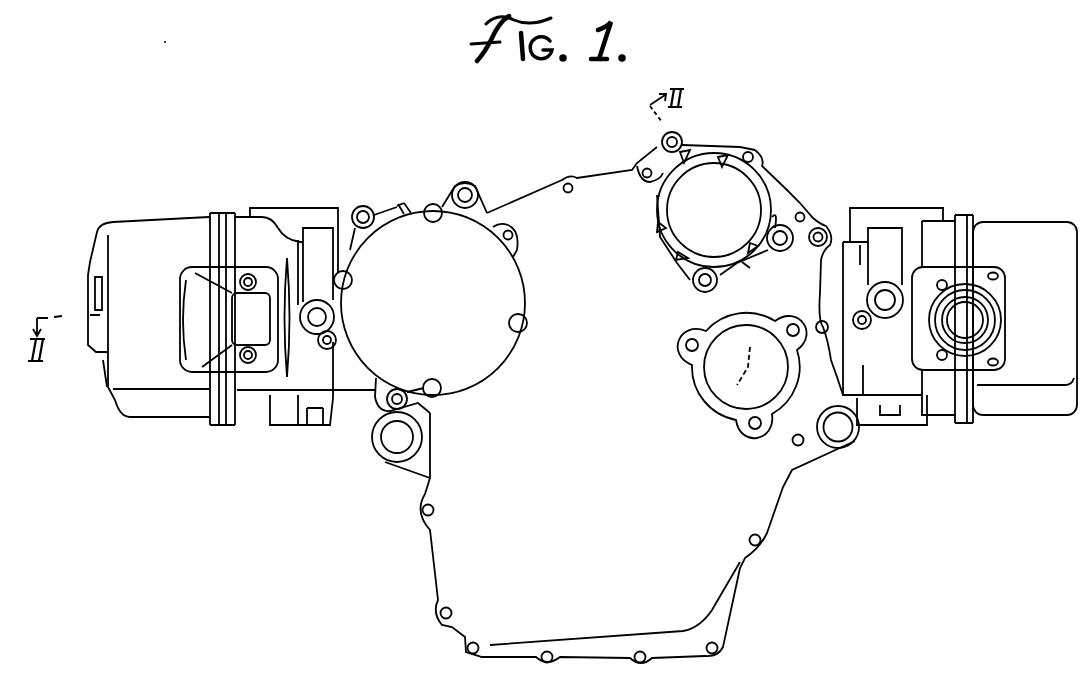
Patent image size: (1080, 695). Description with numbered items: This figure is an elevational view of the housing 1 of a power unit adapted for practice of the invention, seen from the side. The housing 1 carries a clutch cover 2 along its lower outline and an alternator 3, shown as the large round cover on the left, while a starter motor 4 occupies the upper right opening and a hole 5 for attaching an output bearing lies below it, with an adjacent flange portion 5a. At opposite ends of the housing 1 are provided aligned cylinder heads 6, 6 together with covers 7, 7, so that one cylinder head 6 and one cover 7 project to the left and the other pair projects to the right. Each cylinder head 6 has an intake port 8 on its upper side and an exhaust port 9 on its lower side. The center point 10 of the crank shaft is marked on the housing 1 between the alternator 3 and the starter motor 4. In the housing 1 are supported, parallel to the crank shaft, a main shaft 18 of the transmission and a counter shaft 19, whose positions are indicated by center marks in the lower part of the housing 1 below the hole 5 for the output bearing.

The housing 1 is at (775, 507).
The clutch cover 2 is at (703, 562).
The alternator 3 is at (393, 352).
The starter motor 4 is at (728, 180).
The hole for attaching an output bearing 5 is at (750, 370).
The flange portion 5a is at (745, 265).
The cylinder head 6 is at (287, 392).
The cover 7 is at (160, 387).
The intake port 8 is at (293, 207).
The exhaust port 9 is at (290, 425).
The center point of a crank shaft 10 is at (571, 318).
The main shaft 18 is at (595, 477).
The counter shaft 19 is at (667, 480).